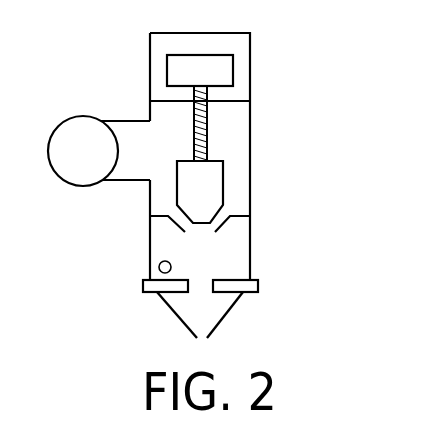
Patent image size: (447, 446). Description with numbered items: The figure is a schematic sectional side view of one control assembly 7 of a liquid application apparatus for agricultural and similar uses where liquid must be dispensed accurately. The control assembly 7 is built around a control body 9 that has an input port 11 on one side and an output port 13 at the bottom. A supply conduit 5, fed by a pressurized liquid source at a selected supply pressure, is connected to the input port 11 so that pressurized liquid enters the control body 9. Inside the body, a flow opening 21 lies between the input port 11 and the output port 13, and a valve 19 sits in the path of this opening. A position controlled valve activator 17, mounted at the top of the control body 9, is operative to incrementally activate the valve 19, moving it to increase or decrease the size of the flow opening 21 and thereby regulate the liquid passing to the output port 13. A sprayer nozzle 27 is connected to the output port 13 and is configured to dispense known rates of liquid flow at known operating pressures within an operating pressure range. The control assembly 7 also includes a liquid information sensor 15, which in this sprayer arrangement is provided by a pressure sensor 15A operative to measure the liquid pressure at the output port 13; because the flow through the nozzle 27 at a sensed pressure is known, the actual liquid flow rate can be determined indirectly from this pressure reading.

The supply conduit 5 is at (53, 169).
The control assembly 7 is at (268, 90).
The control body 9 is at (251, 131).
The input port 11 is at (141, 167).
The output port 13 is at (201, 292).
The liquid information sensor 15 is at (99, 266).
The pressure sensor 15A is at (158, 265).
The position controlled valve activator 17 is at (233, 66).
The valve 19 is at (224, 193).
The flow opening 21 is at (228, 213).
The sprayer nozzle 27 is at (193, 333).